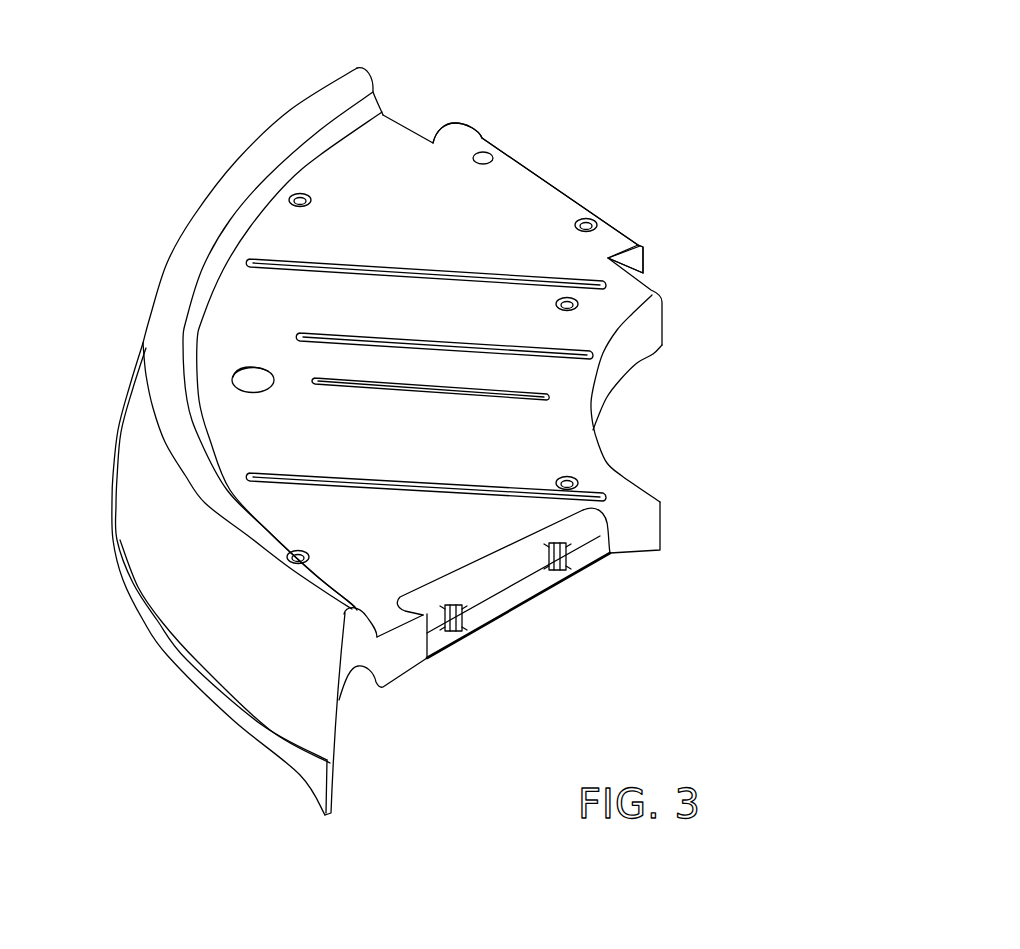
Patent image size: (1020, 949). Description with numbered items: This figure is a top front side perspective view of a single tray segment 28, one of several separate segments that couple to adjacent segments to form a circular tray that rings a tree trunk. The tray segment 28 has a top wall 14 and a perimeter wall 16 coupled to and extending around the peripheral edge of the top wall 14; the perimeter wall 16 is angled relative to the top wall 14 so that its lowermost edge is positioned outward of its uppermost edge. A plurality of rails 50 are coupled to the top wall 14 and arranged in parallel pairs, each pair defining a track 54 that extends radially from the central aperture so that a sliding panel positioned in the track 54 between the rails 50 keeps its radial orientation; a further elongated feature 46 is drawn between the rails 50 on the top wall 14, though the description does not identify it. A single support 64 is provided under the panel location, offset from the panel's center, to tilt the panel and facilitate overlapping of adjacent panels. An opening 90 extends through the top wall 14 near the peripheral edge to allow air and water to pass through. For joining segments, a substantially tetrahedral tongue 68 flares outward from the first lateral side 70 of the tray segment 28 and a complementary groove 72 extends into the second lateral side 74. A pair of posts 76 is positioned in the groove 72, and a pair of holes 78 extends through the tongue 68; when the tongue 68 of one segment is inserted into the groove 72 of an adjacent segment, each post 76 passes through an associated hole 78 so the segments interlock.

The top wall 14 is at (388, 143).
The perimeter wall 16 is at (287, 720).
The tray segment 28 is at (652, 243).
The central slot 46 is at (447, 385).
The rail 50 is at (467, 274).
The track 54 is at (242, 346).
The support 64 is at (620, 345).
The tongue 68 is at (542, 190).
The first lateral side 70 is at (418, 128).
The groove 72 is at (495, 595).
The second lateral side 74 is at (410, 665).
The post 76 is at (566, 570).
The hole 78 is at (484, 150).
The opening 90 is at (233, 380).